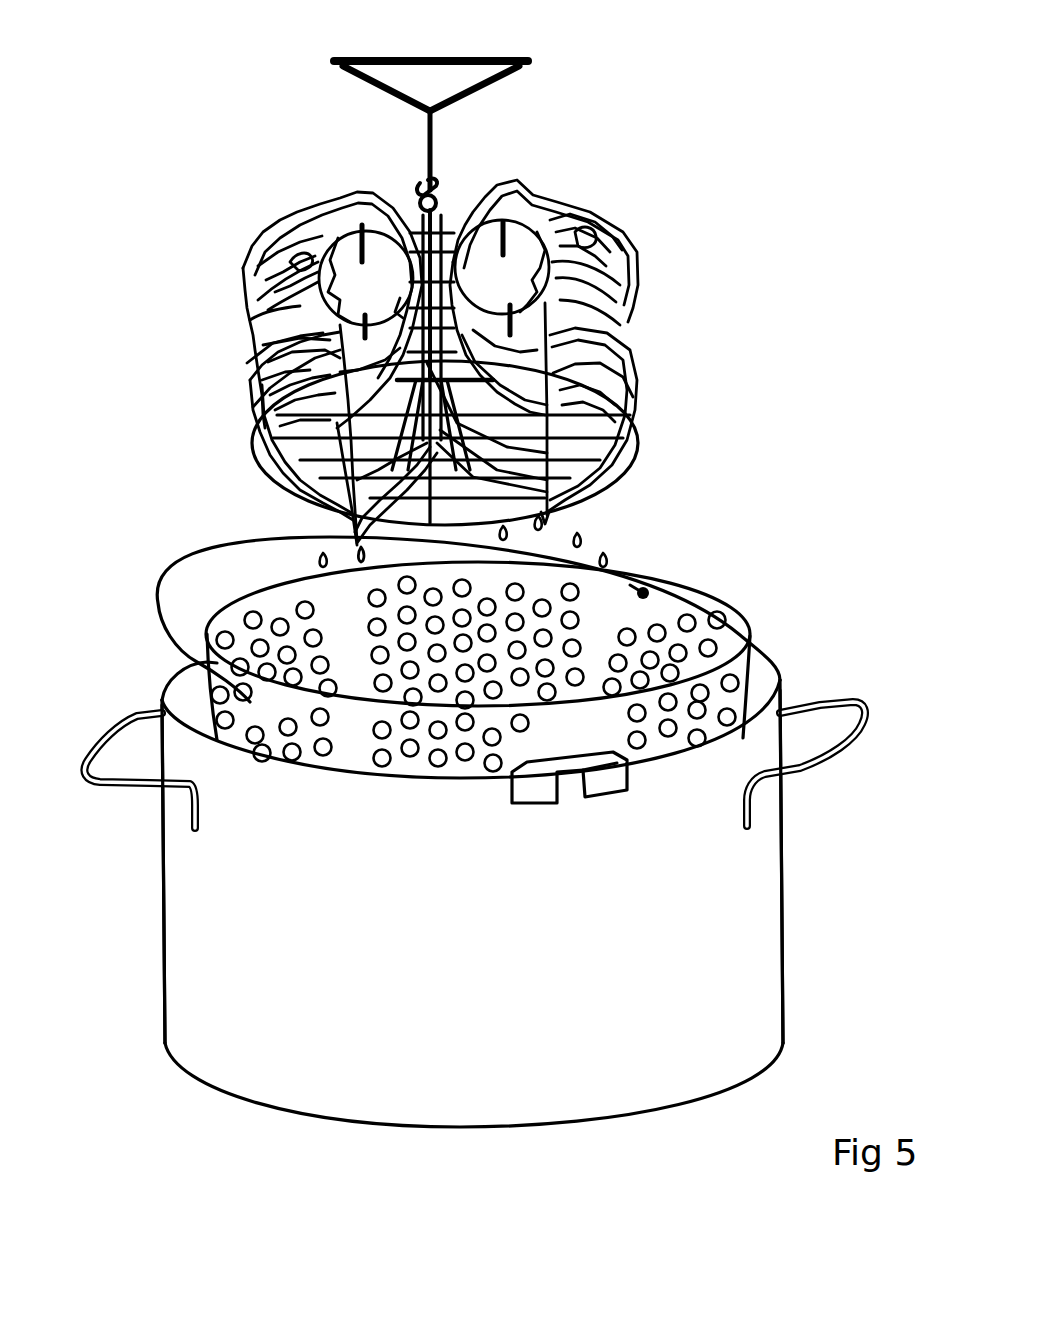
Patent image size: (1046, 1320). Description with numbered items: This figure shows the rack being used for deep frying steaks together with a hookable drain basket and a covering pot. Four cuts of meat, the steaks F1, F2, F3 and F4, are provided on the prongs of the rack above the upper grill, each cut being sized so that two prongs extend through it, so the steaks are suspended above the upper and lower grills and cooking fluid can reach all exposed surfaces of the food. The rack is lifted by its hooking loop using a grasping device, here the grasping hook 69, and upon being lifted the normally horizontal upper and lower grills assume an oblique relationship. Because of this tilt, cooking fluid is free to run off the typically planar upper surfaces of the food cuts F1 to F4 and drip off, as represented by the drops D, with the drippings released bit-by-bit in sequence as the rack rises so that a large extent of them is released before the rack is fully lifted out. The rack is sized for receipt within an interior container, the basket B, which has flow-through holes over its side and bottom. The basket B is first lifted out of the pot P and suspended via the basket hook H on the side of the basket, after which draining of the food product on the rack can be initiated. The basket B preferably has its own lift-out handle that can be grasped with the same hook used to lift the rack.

The grasping hook 69 is at (497, 87).
The steak F1 is at (340, 213).
The steak F2 is at (537, 193).
The steak F3 is at (530, 480).
The steak F4 is at (350, 498).
The drops D is at (580, 530).
The basket B is at (722, 587).
The basket hook H is at (527, 790).
The pot P is at (768, 953).